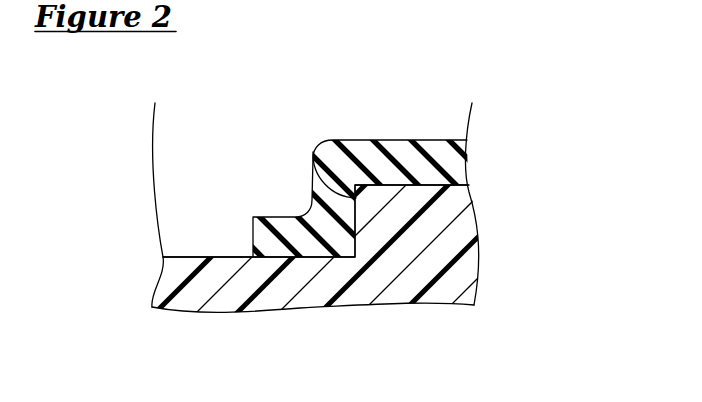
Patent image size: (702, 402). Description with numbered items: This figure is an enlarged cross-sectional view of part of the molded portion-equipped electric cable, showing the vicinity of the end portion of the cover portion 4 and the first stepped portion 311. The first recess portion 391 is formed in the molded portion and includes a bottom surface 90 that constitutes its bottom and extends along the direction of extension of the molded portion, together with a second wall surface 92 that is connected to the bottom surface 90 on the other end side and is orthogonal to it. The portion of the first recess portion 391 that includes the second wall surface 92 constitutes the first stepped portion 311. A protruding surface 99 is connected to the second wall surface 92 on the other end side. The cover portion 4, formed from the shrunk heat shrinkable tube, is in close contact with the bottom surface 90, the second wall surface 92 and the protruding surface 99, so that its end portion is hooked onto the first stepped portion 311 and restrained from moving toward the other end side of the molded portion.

The cover portion 4 is at (418, 140).
The bottom surface 90 is at (222, 257).
The second wall surface 92 is at (313, 152).
The protruding surface 99 is at (456, 178).
The first stepped portion 311 is at (378, 222).
The first recess portion 391 is at (188, 180).